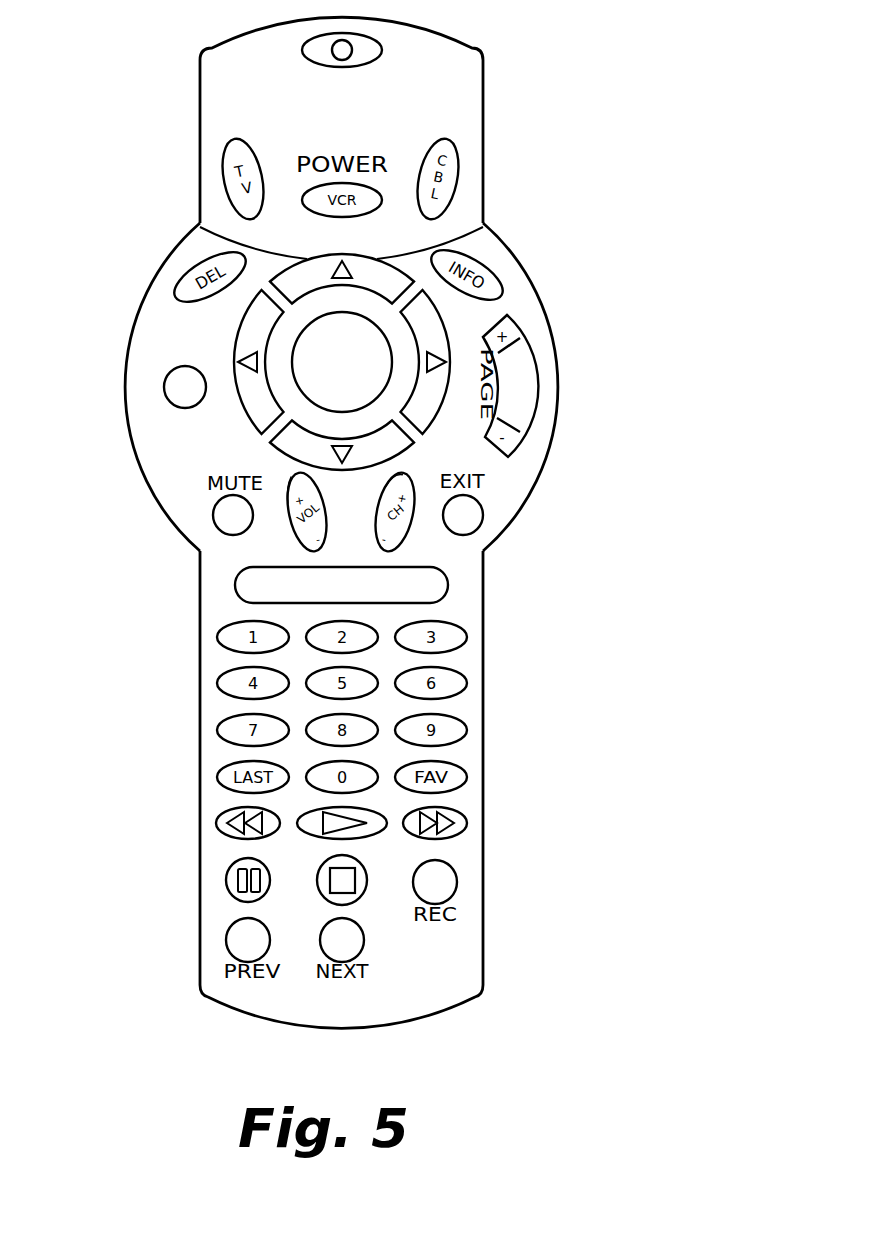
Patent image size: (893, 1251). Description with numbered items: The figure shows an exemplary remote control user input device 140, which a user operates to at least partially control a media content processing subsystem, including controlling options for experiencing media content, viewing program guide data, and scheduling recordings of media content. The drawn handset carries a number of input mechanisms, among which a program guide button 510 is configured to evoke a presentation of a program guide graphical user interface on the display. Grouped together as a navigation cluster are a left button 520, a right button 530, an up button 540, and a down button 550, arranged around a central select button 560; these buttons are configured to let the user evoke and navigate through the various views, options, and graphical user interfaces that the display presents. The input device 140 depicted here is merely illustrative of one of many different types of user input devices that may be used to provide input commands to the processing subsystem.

The user input device 140 is at (484, 66).
The program guide button 510 is at (448, 586).
The left button 520 is at (243, 415).
The right button 530 is at (443, 318).
The up button 540 is at (200, 227).
The down button 550 is at (407, 438).
The select button 560 is at (300, 338).